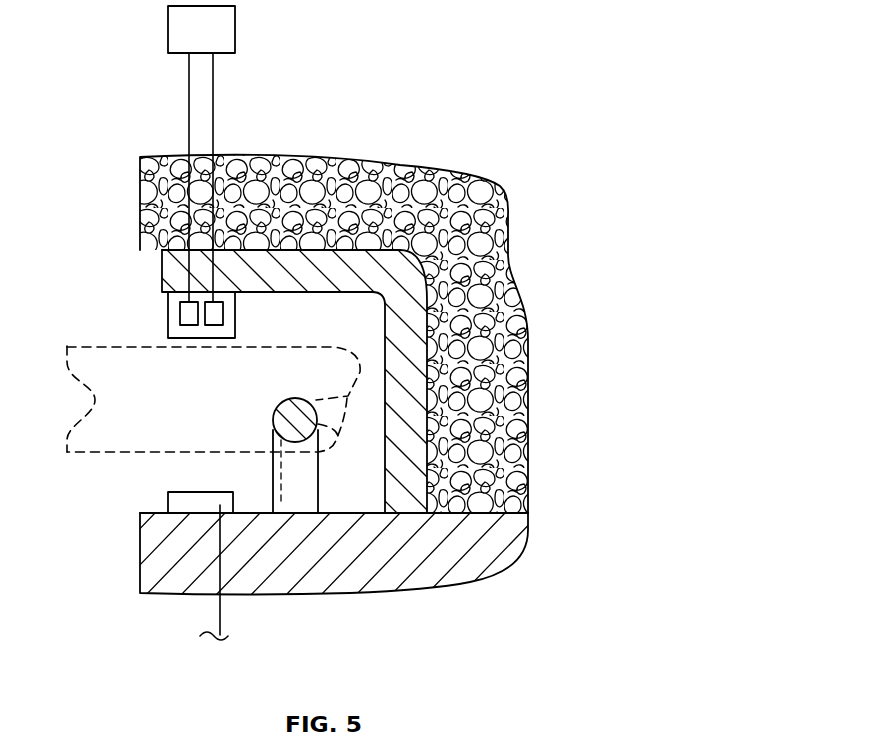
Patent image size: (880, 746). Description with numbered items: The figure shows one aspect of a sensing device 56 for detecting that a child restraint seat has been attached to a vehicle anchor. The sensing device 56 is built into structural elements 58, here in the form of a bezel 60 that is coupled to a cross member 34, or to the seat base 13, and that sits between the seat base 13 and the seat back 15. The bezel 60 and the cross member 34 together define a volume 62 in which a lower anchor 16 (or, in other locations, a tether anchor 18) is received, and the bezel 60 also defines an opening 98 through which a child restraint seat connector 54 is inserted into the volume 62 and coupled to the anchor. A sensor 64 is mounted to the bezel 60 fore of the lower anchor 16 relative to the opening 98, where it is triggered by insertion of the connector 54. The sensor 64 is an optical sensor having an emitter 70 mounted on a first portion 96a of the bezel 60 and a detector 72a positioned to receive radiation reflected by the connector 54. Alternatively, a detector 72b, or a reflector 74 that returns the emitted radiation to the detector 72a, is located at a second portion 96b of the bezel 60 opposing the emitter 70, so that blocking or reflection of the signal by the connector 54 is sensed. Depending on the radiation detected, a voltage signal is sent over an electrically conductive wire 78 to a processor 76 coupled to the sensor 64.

The seat base 13 is at (430, 567).
The seat back 15 is at (490, 230).
The lower anchor 16 is at (334, 543).
The tether anchor 18 is at (293, 502).
The cross member 34 is at (325, 579).
The child restraint seat connector 54 is at (211, 418).
The sensing device 56 is at (358, 321).
The structural element 58 is at (398, 538).
The bezel 60 is at (402, 342).
The volume 62 is at (350, 421).
The sensor 64 is at (162, 300).
The emitter 70 is at (180, 316).
The detector 72a is at (223, 316).
The detector 72b is at (168, 569).
The reflector 74 is at (200, 502).
The processor 76 is at (216, 44).
The electrically conductive wire 78 is at (188, 106).
The first portion of the bezel 96a is at (245, 267).
The second portion of the bezel 96b is at (157, 513).
The opening 98 is at (161, 462).